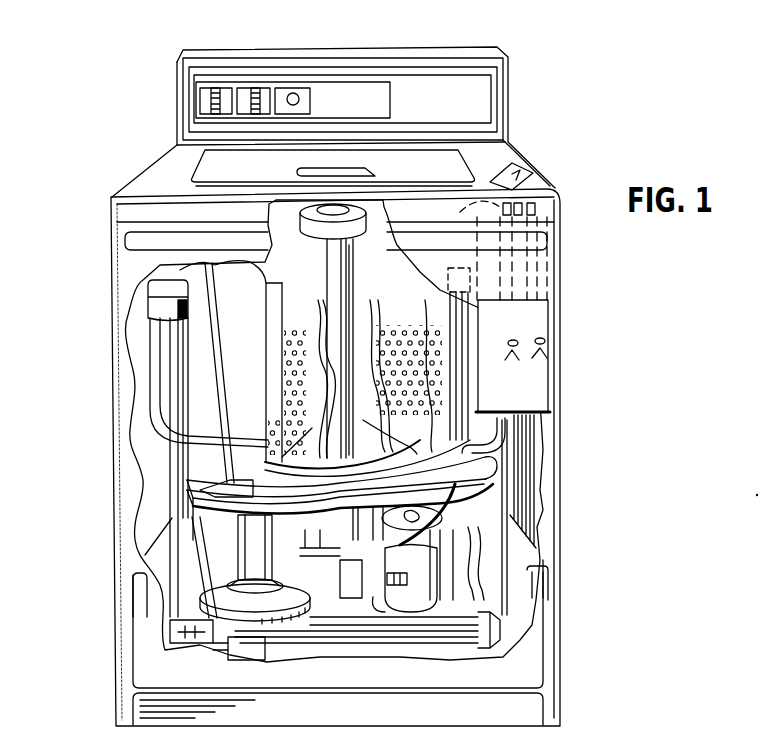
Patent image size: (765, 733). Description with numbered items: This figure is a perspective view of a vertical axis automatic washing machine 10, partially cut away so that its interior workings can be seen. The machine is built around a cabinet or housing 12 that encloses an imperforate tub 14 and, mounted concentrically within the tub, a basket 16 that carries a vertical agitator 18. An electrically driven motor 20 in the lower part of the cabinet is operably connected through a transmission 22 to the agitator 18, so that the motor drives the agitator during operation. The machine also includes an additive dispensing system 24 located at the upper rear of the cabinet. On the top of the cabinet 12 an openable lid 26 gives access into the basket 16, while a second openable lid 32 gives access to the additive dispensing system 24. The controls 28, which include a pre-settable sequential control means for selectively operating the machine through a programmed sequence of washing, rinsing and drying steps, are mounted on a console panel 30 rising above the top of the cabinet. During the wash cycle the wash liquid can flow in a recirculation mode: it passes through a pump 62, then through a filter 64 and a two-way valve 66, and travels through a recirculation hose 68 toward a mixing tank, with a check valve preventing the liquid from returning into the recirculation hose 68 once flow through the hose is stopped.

The automatic washing machine 10 is at (568, 405).
The cabinet 12 is at (123, 271).
The imperforate tub 14 is at (242, 320).
The basket 16 is at (265, 413).
The vertical agitator 18 is at (357, 317).
The motor 20 is at (420, 593).
The transmission 22 is at (341, 590).
The additive dispensing system 24 is at (525, 393).
The lid 26 is at (458, 165).
The controls 28 is at (293, 93).
The console panel 30 is at (487, 97).
The second openable lid 32 is at (517, 175).
The pump 62 is at (247, 564).
The filter 64 is at (250, 592).
The two-way valve 66 is at (230, 650).
The recirculation hose 68 is at (537, 528).